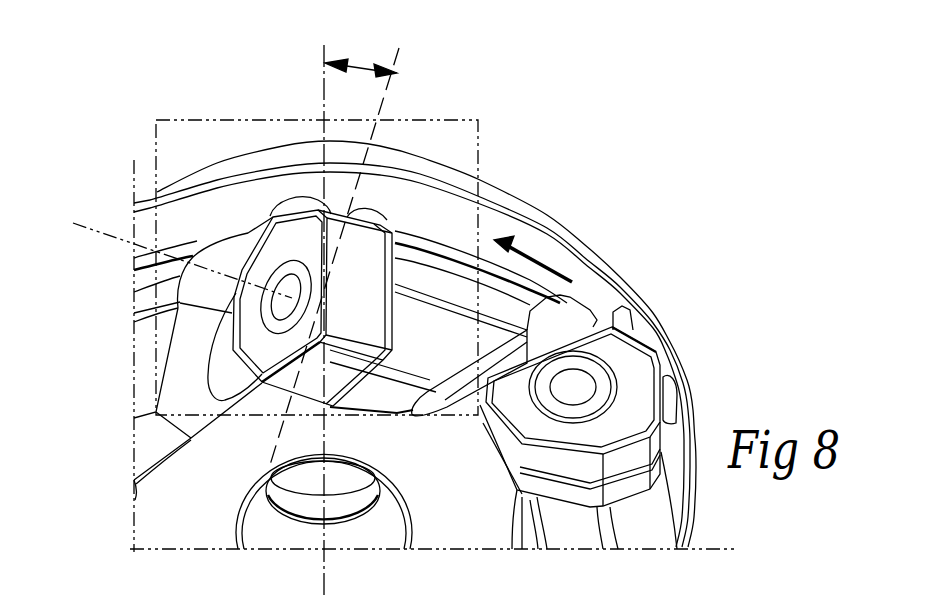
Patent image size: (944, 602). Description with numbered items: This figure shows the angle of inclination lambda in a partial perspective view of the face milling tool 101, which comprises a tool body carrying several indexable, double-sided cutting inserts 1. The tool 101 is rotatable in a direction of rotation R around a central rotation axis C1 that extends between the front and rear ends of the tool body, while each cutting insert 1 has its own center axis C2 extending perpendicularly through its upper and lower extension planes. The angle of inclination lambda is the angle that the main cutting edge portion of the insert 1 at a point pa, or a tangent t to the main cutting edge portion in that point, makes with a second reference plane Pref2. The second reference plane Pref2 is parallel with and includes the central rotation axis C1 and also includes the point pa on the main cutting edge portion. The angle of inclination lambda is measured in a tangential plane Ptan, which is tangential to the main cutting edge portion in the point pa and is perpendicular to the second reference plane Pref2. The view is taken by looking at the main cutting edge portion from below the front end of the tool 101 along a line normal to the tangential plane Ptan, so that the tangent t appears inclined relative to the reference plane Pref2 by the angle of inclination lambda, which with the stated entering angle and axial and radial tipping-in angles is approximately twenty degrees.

The cutting insert 1 is at (283, 246).
The face milling tool 101 is at (606, 262).
The central rotation axis C1 is at (324, 570).
The center axis C2 is at (112, 238).
The second reference plane Pref2 is at (325, 84).
The tangential plane Ptan is at (477, 143).
The tangent t is at (395, 82).
The angle of inclination lambda is at (361, 54).
The direction of rotation R is at (533, 258).
The point on the main cutting edge portion pa is at (327, 289).